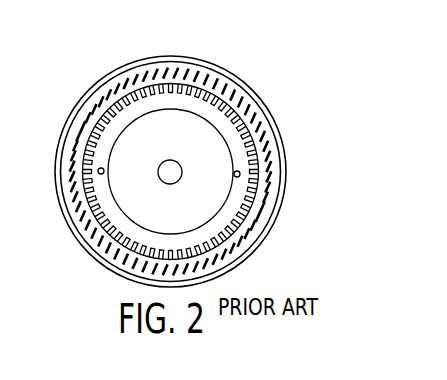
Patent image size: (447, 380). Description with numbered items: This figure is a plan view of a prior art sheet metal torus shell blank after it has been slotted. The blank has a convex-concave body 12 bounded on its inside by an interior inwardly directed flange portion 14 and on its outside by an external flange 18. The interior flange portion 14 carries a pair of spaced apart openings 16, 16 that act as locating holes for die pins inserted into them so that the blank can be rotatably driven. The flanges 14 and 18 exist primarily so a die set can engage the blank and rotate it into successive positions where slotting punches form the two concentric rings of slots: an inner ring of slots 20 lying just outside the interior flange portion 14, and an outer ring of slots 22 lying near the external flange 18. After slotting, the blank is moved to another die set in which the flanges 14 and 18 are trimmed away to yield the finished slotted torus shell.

The convex-concave body 12 is at (188, 80).
The interior inwardly directed flange portion 14 is at (218, 123).
The openings 16 is at (104, 170).
The external flange 18 is at (245, 91).
The inner ring of slots 20 is at (150, 91).
The outer ring of slots 22 is at (268, 157).